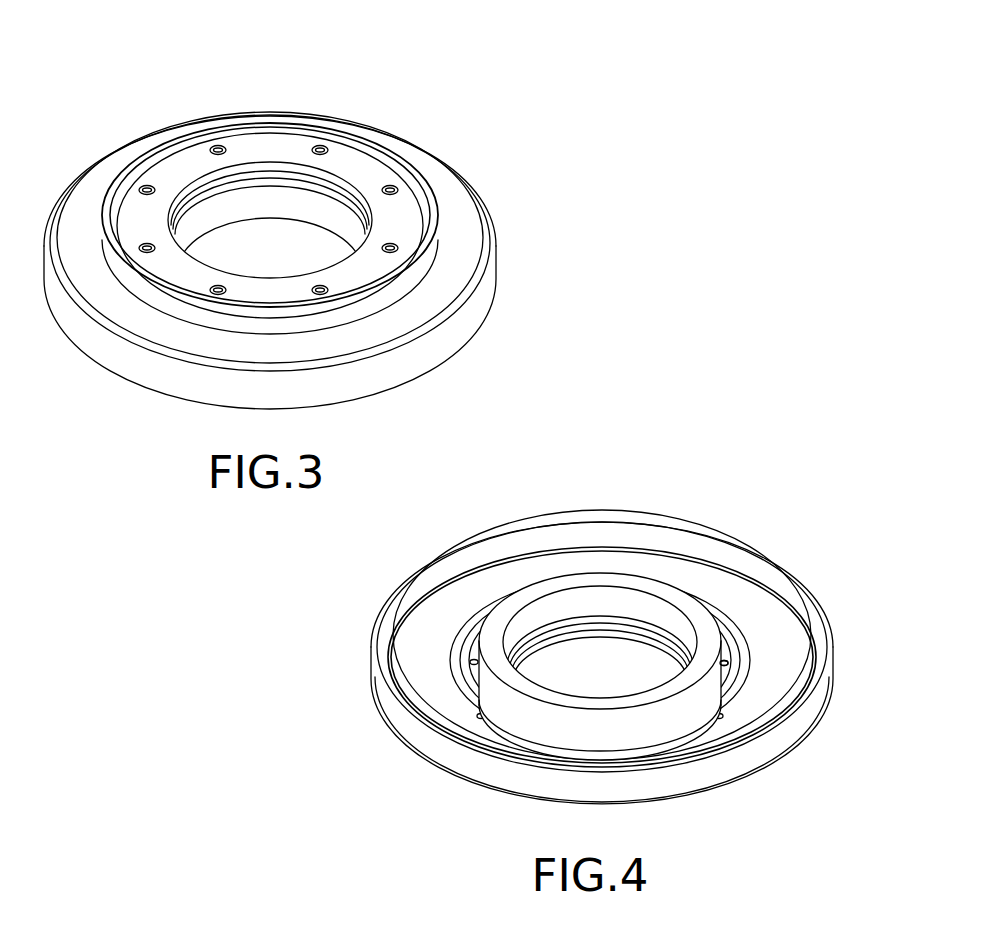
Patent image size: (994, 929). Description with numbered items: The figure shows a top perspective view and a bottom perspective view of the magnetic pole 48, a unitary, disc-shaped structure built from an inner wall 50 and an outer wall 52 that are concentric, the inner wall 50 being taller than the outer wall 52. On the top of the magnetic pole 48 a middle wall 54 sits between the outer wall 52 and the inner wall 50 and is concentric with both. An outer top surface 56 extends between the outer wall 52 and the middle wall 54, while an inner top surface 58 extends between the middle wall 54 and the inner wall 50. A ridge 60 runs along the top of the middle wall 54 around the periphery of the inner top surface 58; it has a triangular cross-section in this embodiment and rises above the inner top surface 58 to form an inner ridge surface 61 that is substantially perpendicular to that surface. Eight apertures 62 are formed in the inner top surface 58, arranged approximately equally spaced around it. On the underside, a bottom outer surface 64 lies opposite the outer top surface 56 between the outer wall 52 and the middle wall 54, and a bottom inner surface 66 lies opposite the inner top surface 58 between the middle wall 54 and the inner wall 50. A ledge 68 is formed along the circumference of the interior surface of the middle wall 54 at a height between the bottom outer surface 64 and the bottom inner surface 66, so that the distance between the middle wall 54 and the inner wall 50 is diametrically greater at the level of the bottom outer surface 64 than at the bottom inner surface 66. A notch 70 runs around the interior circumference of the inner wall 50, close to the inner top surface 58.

In FIG. 3, the magnetic pole 48 is at (496, 106).
In FIG. 4, the magnetic pole 48 is at (720, 482).
In FIG. 3, the inner wall 50 is at (318, 212).
In FIG. 4, the inner wall 50 is at (702, 697).
In FIG. 3, the outer wall 52 is at (482, 305).
In FIG. 4, the outer wall 52 is at (762, 750).
In FIG. 3, the middle wall 54 is at (163, 295).
In FIG. 4, the middle wall 54 is at (722, 622).
In FIG. 3, the outer top surface 56 is at (467, 217).
In FIG. 3, the inner top surface 58 is at (140, 218).
In FIG. 3, the ridge 60 is at (377, 290).
In FIG. 3, the inner ridge surface 61 is at (270, 137).
In FIG. 3, the apertures 62 is at (218, 148).
In FIG. 4, the apertures 62 is at (725, 660).
In FIG. 4, the bottom outer surface 64 is at (432, 638).
In FIG. 4, the bottom inner surface 66 is at (467, 697).
In FIG. 4, the ledge 68 is at (457, 671).
In FIG. 4, the notch 70 is at (597, 605).